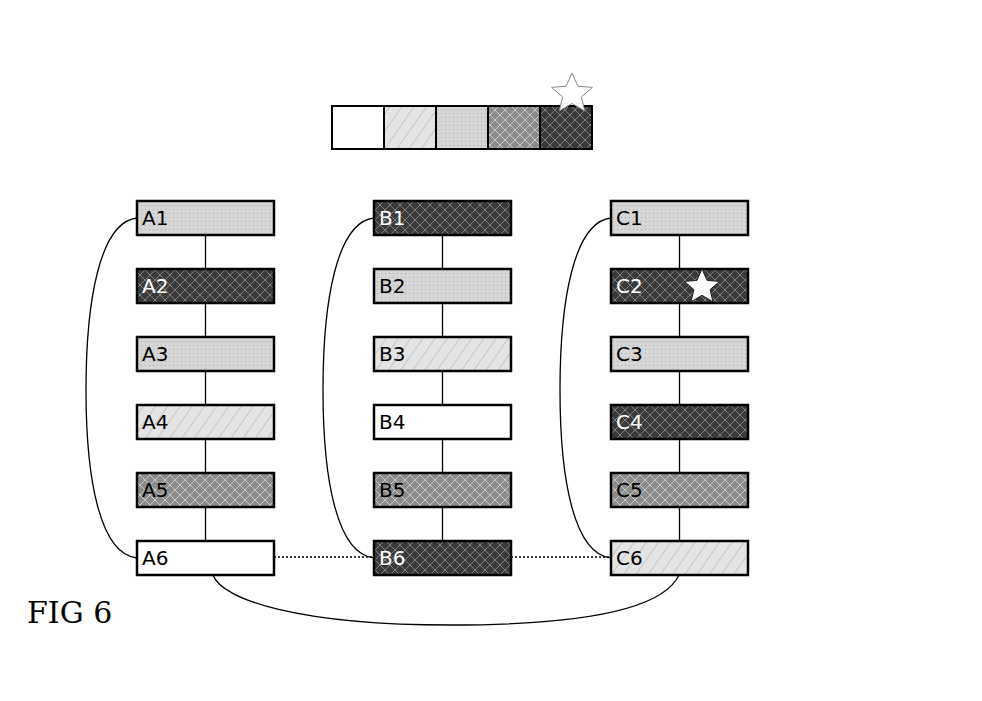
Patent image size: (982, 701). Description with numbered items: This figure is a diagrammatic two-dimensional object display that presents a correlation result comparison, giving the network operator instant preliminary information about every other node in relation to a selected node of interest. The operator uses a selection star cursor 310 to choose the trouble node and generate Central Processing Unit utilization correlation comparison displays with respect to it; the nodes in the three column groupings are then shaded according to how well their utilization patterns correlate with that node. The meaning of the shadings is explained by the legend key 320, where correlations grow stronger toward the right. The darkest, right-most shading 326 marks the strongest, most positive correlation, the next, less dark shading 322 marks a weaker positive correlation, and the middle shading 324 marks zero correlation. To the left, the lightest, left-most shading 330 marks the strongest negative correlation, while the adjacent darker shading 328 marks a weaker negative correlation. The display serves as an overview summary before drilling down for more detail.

The selection star cursor 310 is at (597, 90).
The legend key 320 is at (232, 72).
The less dark shading 322 is at (488, 107).
The middle shading 324 is at (447, 107).
The darkest/right-most shading 326 is at (592, 128).
The darker/more right-most negative shading 328 is at (405, 107).
The lightest/left-most shading 330 is at (332, 125).